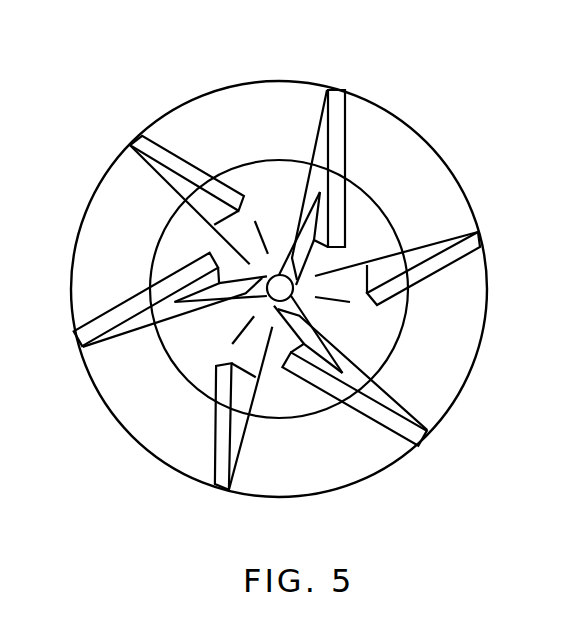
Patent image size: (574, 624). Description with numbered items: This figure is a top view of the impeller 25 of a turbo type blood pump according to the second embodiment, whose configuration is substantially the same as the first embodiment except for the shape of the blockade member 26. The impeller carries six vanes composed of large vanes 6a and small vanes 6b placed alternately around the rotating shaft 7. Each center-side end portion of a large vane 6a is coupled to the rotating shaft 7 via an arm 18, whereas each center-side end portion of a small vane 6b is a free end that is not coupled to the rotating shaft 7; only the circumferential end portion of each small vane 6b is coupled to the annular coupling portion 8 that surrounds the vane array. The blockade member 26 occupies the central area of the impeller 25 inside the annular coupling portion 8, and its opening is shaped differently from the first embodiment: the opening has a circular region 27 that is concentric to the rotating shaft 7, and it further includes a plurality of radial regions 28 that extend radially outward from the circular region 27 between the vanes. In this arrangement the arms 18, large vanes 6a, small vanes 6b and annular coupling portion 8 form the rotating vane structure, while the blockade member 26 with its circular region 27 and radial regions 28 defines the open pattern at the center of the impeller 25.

The impeller 25 is at (430, 59).
The annular coupling portion 8 is at (453, 315).
The blockade member 26 is at (370, 230).
The rotating shaft 7 is at (388, 350).
The large vanes 6a is at (335, 130).
The small vanes 6b is at (163, 152).
The arm 18 is at (292, 258).
The circular region 27 is at (258, 308).
The radial regions 28 is at (262, 350).